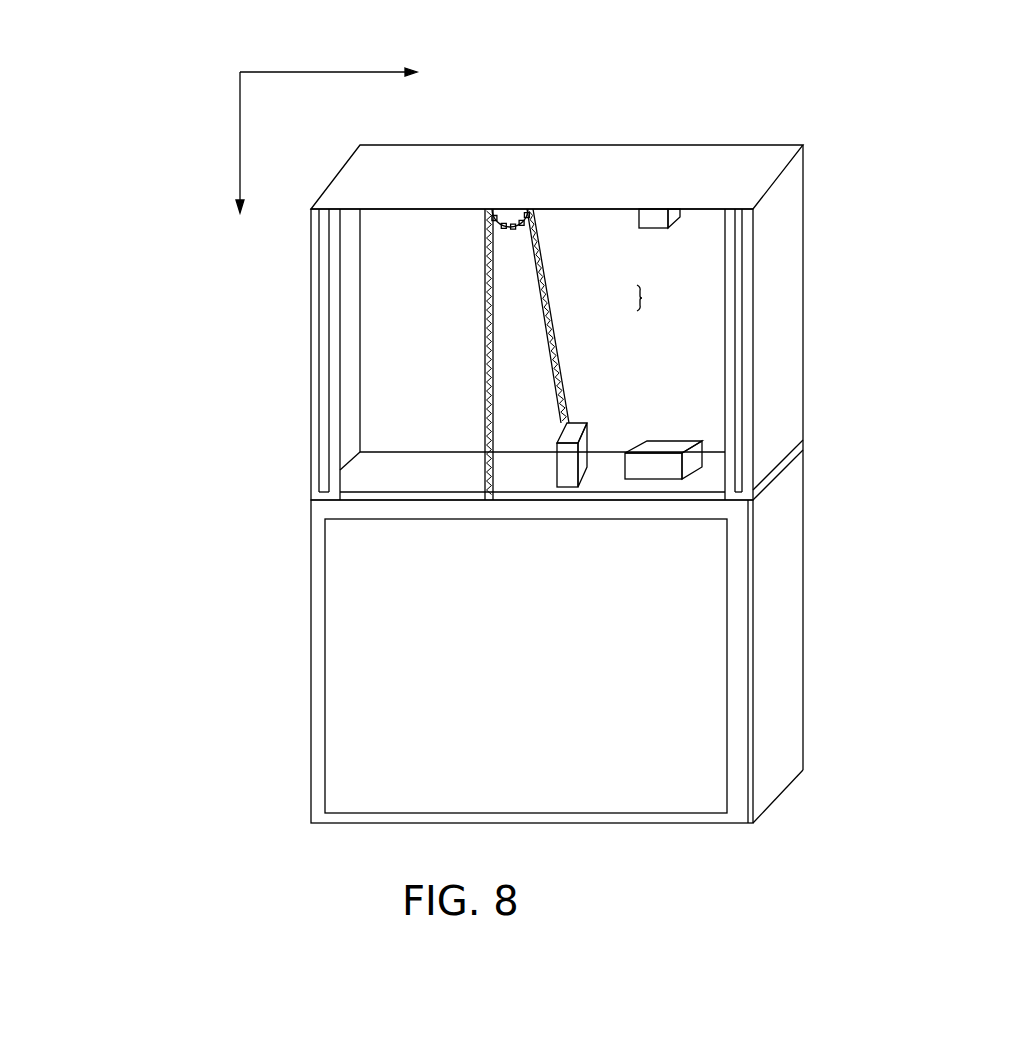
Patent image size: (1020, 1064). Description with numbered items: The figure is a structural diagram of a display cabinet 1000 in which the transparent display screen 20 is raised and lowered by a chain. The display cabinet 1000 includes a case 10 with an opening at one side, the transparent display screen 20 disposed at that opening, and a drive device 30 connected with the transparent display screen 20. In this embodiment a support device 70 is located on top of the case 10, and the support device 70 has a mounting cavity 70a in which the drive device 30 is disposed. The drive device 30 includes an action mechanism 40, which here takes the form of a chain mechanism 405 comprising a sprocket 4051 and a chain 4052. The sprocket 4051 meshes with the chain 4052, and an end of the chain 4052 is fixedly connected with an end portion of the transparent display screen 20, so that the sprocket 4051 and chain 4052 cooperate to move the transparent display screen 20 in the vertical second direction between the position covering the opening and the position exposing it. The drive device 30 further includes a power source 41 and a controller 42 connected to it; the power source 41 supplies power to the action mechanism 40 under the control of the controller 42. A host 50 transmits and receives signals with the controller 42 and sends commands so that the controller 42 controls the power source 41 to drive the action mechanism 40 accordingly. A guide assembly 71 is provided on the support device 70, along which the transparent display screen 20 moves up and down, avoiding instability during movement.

The display cabinet 1000 is at (192, 32).
The case 10 is at (783, 663).
The transparent display screen 20 is at (743, 767).
The drive device 30 is at (82, 252).
The action mechanism 40 is at (163, 303).
The power source 41 is at (858, 587).
The controller 42 is at (867, 505).
The chain mechanism 405 is at (223, 295).
The sprocket 4051 is at (508, 218).
The chain 4052 is at (485, 285).
The host 50 is at (680, 218).
The support device 70 is at (780, 378).
The mounting cavity 70a is at (640, 298).
The guide assembly 71 is at (738, 448).